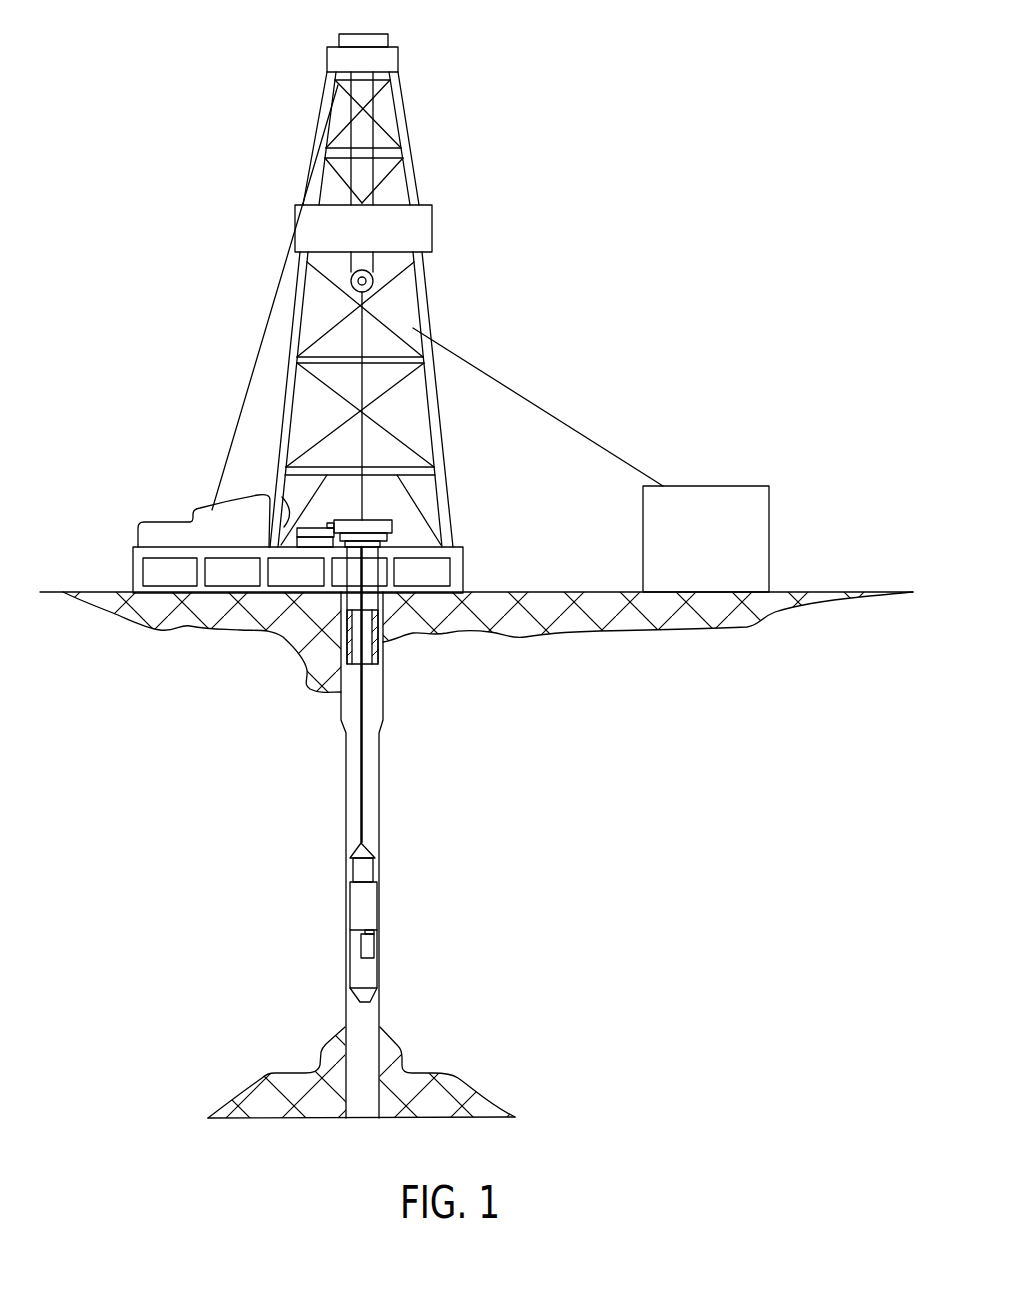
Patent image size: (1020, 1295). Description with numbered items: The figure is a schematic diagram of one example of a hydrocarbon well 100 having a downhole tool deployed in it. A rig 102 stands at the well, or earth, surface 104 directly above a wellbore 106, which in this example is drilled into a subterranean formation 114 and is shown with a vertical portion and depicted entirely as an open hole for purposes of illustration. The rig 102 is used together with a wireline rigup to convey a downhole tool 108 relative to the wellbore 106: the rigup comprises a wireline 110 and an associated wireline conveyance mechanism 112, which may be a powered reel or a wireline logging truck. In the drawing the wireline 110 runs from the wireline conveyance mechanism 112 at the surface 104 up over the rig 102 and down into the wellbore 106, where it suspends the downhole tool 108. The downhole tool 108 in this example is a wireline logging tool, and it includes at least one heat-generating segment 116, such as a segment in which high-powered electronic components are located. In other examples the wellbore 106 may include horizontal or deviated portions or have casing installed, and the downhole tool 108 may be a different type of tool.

The hydrocarbon well 100 is at (657, 237).
The rig 102 is at (145, 345).
The well surface 104 is at (88, 580).
The wellbore 106 is at (377, 705).
The downhole tool 108 is at (363, 980).
The wireline 110 is at (548, 412).
The wireline conveyance mechanism 112 is at (772, 467).
The subterranean formation 114 is at (445, 1082).
The heat-generating segment 116 is at (368, 947).